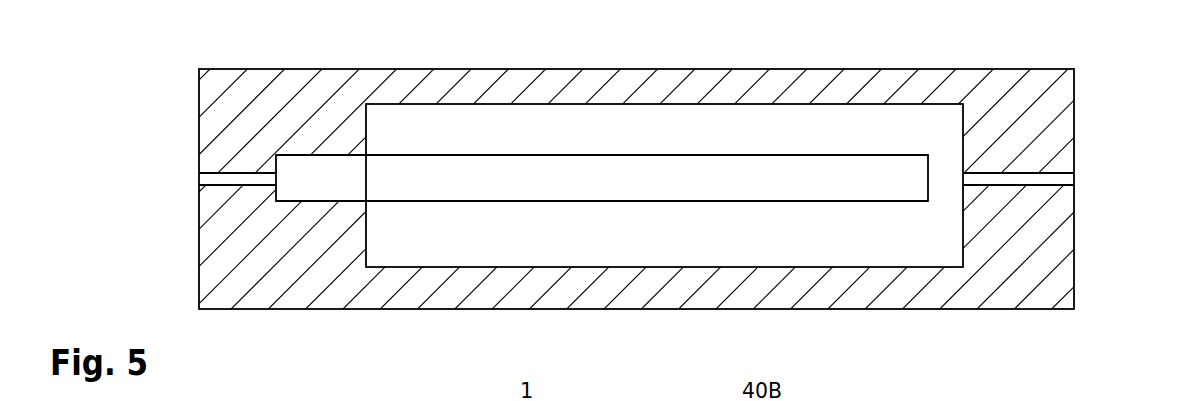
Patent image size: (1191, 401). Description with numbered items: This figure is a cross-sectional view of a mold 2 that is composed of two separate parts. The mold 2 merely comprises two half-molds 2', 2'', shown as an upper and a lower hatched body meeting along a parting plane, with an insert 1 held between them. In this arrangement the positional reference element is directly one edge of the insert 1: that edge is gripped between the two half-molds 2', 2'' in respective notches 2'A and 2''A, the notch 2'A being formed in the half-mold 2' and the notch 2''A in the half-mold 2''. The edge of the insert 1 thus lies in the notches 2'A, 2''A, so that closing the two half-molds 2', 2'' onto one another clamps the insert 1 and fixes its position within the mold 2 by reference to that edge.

The insert 1 is at (648, 163).
The mold 2 is at (683, 169).
The half-mold 2' is at (595, 189).
The half-mold 2'' is at (595, 189).
The notch 2'A is at (602, 89).
The notch 2''A is at (602, 279).